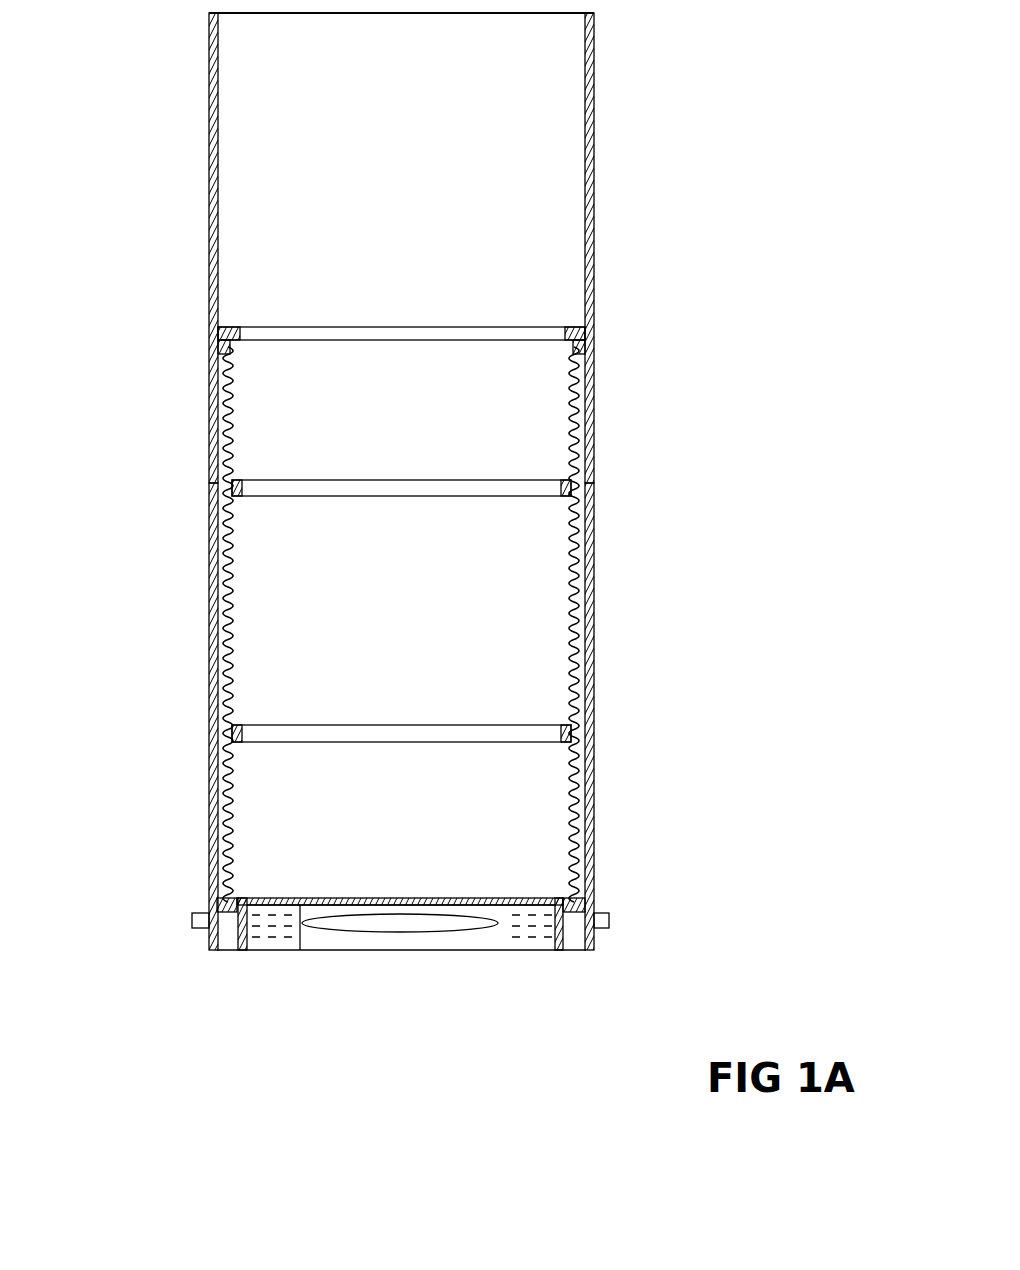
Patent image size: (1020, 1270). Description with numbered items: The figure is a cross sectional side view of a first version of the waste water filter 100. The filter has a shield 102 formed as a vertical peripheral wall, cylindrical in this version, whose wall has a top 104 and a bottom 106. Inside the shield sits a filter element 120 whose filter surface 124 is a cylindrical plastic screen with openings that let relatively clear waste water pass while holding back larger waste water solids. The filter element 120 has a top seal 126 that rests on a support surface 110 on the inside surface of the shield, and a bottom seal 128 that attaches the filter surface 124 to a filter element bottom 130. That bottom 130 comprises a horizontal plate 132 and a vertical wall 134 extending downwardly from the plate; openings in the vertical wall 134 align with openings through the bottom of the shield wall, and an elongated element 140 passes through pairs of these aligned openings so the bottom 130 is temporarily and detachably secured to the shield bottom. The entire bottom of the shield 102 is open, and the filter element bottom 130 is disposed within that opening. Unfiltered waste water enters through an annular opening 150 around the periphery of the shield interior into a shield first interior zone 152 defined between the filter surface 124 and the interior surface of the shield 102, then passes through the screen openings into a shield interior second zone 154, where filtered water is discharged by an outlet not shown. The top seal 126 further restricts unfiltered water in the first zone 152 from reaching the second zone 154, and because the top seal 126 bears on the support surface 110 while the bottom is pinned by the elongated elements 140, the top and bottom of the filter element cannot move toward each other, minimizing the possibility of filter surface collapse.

The waste water filter 100 is at (178, 338).
The shield 102 is at (592, 767).
The top 104 is at (594, 88).
The bottom 106 is at (590, 950).
The support surface 110 is at (218, 353).
The filter element 120 is at (285, 596).
The filter surface 124 is at (577, 464).
The top seal 126 is at (578, 334).
The bottom seal 128 is at (233, 897).
The filter element bottom 130 is at (280, 952).
The horizontal plate 132 is at (299, 942).
The vertical wall 134 is at (240, 930).
The elongated element 140 is at (393, 932).
The annular opening 150 is at (570, 935).
The shield first interior zone 152 is at (575, 640).
The shield interior second zone 154 is at (440, 591).